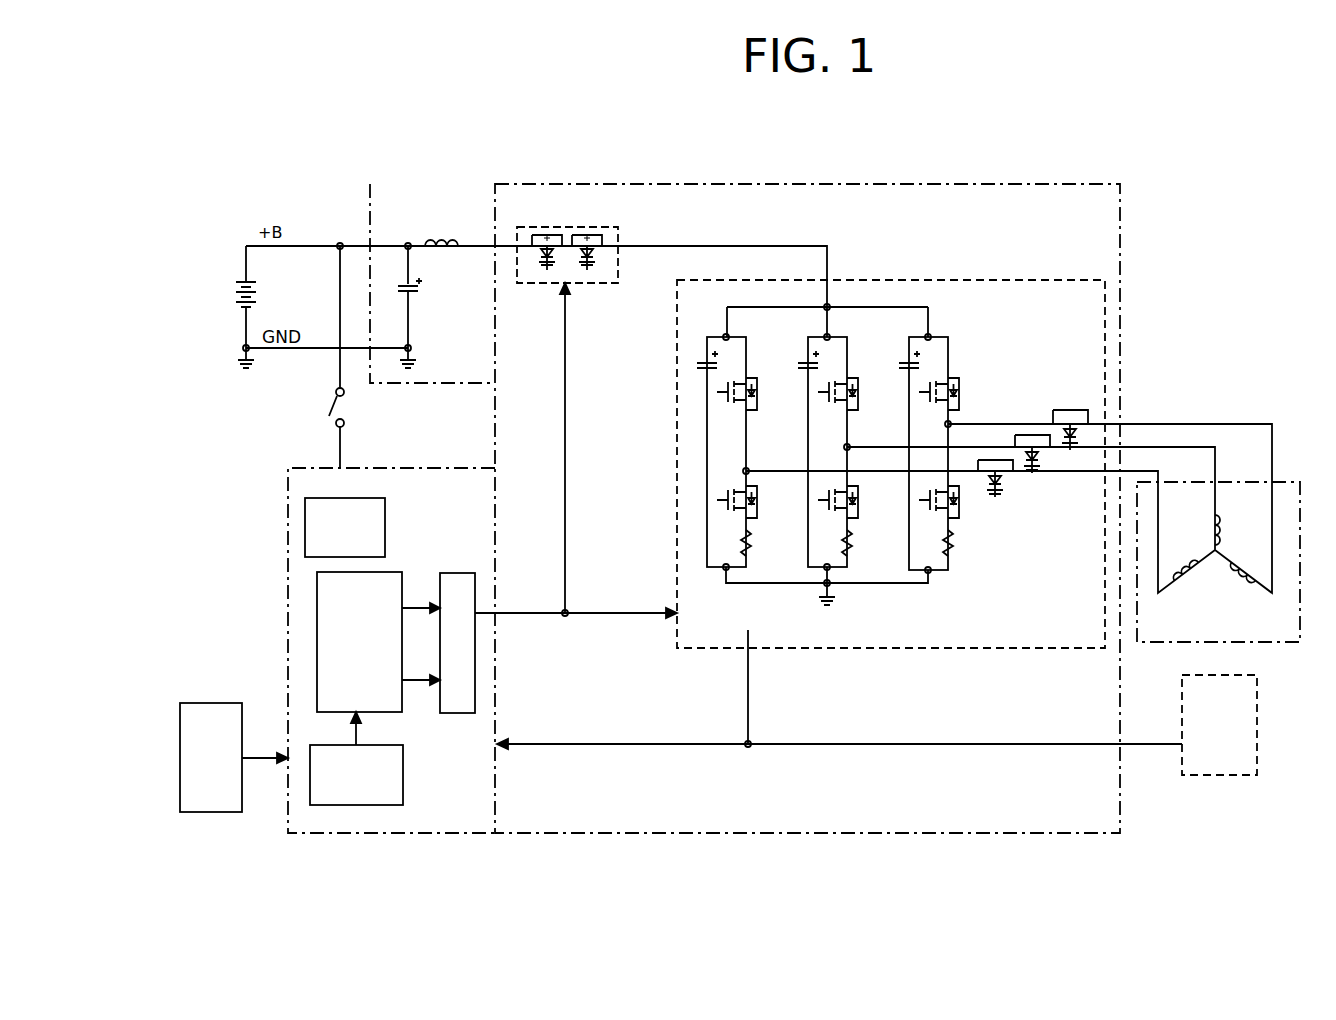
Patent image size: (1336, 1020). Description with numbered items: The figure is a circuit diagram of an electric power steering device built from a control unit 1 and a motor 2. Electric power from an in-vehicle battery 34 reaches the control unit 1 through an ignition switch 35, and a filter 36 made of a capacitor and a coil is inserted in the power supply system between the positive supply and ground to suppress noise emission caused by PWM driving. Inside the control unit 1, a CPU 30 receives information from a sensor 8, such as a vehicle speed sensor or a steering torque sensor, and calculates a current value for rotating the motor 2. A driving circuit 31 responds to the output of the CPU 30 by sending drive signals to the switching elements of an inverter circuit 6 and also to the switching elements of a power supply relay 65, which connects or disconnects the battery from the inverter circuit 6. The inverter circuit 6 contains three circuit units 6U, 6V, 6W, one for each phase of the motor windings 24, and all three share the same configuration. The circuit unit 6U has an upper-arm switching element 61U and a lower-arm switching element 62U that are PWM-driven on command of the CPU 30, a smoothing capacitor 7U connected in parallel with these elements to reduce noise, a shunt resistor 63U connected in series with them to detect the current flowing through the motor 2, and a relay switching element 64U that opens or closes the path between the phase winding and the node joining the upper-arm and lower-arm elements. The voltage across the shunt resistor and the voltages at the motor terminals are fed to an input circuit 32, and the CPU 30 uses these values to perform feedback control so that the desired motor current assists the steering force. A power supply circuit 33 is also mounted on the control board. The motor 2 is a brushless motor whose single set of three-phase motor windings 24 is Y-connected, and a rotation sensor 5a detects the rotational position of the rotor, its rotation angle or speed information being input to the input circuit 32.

The control unit 1 is at (905, 185).
The motor 2 is at (1218, 482).
The rotation sensor 5a is at (1232, 775).
The inverter circuit 6 is at (1020, 280).
The circuit unit 6U is at (715, 418).
The circuit unit 6V is at (830, 335).
The circuit unit 6W is at (932, 335).
The smoothing capacitor 7U is at (697, 370).
The sensor 8 is at (210, 812).
The motor windings 24 is at (1215, 510).
The CPU 30 is at (317, 642).
The driving circuit 31 is at (478, 648).
The input circuit 32 is at (378, 805).
The power supply circuit 33 is at (305, 518).
The in-vehicle battery 34 is at (238, 272).
The ignition switch 35 is at (318, 406).
The filter 36 is at (437, 225).
The upper-arm switching element 61U is at (748, 376).
The lower-arm switching element 62U is at (727, 496).
The shunt resistor 63U is at (752, 557).
The relay switching element 64U is at (996, 497).
The power supply relay 65 is at (557, 227).